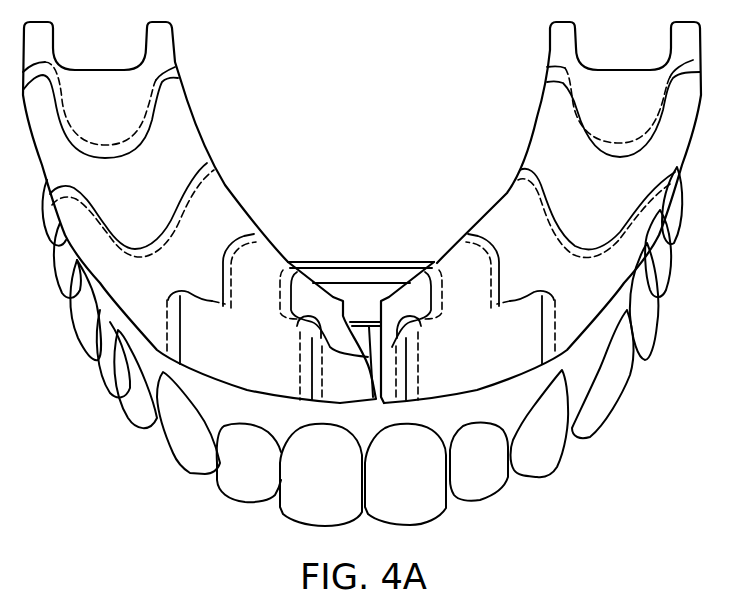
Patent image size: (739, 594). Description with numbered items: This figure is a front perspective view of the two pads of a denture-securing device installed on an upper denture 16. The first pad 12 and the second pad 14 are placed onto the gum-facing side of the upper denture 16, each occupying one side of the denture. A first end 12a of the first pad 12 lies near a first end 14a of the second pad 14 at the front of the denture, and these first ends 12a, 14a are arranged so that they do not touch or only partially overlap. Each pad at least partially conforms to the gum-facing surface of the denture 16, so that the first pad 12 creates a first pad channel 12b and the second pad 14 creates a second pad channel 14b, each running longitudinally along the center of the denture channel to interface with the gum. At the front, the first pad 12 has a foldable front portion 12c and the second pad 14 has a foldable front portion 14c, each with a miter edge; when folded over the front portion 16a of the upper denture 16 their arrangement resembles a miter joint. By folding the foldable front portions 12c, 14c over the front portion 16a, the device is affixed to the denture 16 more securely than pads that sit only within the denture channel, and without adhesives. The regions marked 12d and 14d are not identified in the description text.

The first pad 12 is at (199, 212).
The first end of the first pad 12a is at (283, 430).
The first pad channel 12b is at (97, 92).
The foldable front portion of the first pad 12c is at (350, 377).
The anterior tab of first member 12d is at (306, 340).
The second pad 14 is at (541, 211).
The first end of the second pad 14a is at (426, 400).
The second pad channel 14b is at (615, 83).
The foldable front portion of the second pad 14c is at (384, 385).
The anterior tab of second member 14d is at (385, 347).
The upper denture 16 is at (152, 370).
The front portion of the upper denture 16a is at (373, 338).